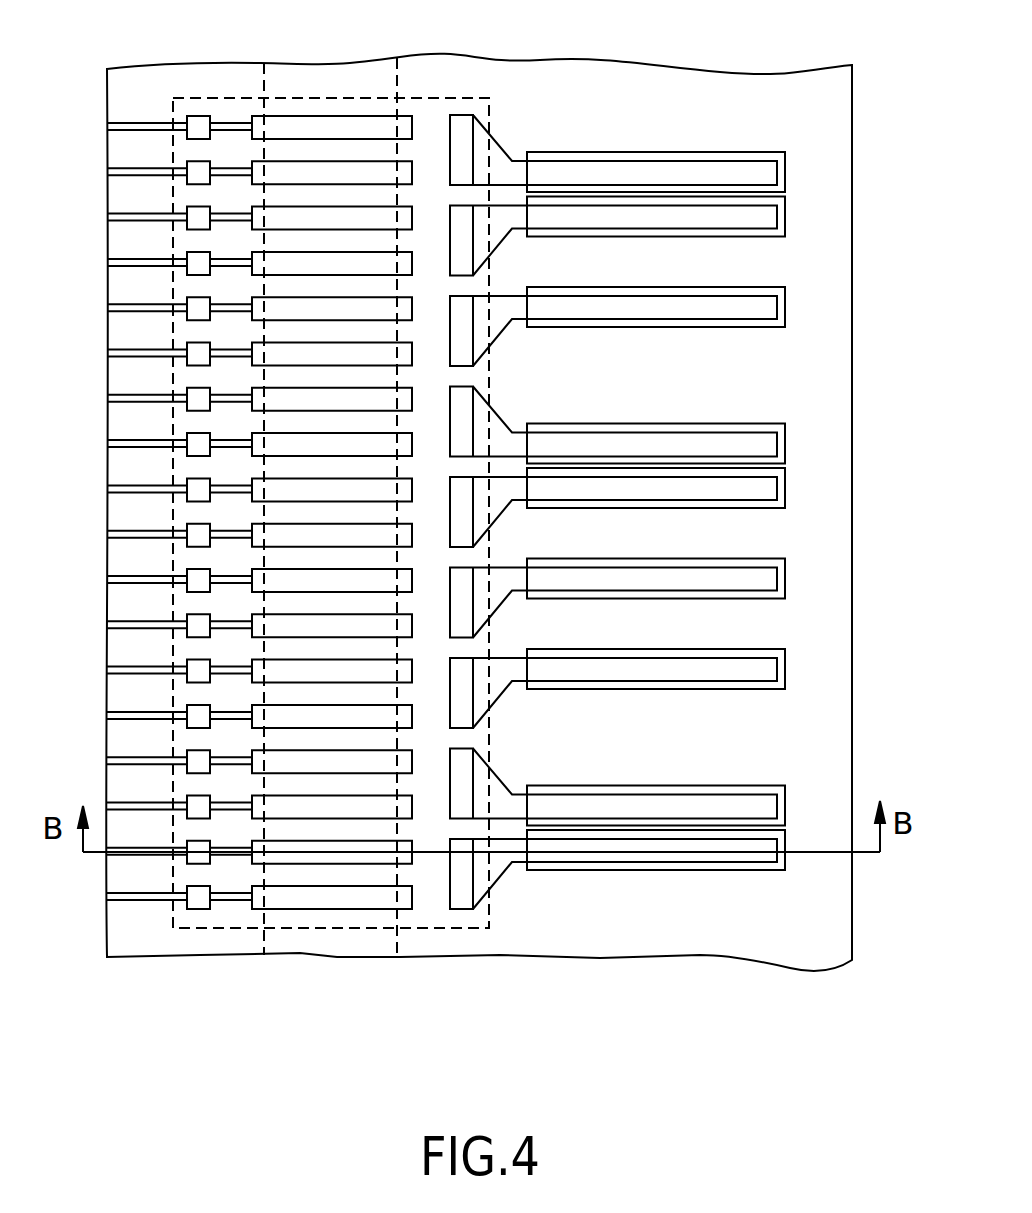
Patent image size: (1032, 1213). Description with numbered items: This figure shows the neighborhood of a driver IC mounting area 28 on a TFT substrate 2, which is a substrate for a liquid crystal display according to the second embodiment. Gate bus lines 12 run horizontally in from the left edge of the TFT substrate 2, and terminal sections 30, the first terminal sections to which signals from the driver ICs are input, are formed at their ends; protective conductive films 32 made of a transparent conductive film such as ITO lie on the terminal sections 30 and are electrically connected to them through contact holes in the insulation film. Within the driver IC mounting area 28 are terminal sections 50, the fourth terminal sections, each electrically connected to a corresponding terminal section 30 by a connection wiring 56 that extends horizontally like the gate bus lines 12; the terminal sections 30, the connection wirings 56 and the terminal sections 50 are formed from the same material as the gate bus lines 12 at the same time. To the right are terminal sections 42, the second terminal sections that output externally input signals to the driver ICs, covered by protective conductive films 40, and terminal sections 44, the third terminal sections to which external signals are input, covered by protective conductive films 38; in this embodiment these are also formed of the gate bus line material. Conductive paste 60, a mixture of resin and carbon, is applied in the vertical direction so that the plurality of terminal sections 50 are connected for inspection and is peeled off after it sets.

The TFT substrate 2 is at (852, 103).
The gate bus lines 12 is at (131, 123).
The driver IC mounting area 28 is at (205, 928).
The terminal sections 30 is at (193, 116).
The protective conductive films 32 is at (203, 116).
The protective conductive films 38 is at (620, 152).
The protective conductive films 40 is at (468, 115).
The terminal sections 42 is at (458, 115).
The terminal sections 44 is at (700, 161).
The terminal sections 50 is at (331, 116).
The connection wirings 56 is at (231, 123).
The conductive paste 60 is at (337, 957).